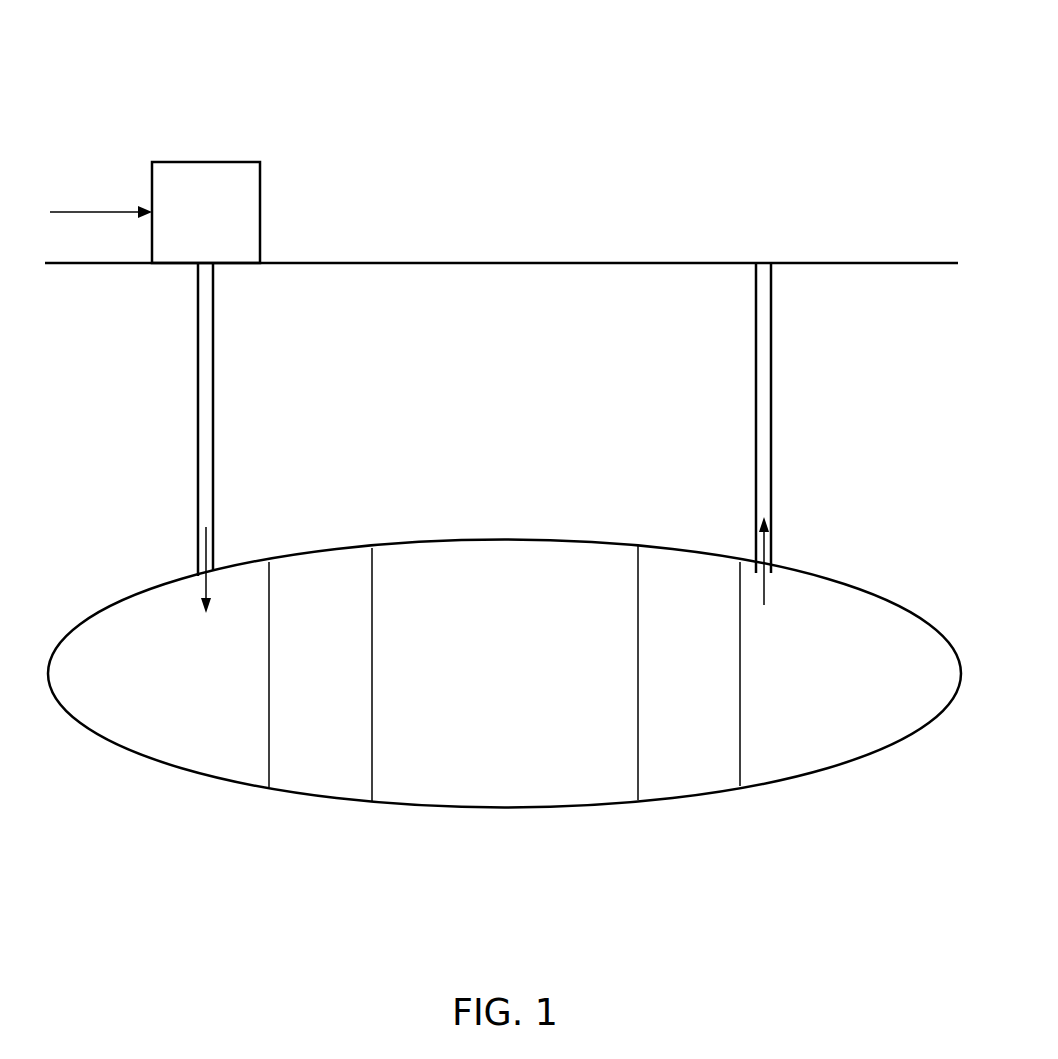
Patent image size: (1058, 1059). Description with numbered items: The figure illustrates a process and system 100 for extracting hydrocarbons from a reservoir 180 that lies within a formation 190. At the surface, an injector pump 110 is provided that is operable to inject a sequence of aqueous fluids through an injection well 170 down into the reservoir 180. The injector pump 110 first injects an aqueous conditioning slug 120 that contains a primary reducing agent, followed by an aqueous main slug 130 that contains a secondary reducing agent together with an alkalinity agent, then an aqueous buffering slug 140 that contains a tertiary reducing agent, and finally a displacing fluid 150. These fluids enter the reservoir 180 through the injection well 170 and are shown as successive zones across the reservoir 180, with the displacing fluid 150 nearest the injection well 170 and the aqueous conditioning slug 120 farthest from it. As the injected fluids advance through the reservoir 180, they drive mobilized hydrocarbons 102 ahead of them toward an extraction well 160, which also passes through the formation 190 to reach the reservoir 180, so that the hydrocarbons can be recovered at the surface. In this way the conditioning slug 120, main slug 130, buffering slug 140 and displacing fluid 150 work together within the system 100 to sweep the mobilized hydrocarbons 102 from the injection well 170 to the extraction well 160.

The process and system 100 is at (140, 50).
The injector pump 110 is at (231, 226).
The formation 190 is at (511, 371).
The injection well 170 is at (197, 397).
The extraction well 160 is at (773, 401).
The reservoir 180 is at (342, 548).
The displacing fluid 150 is at (208, 697).
The aqueous buffering slug 140 is at (345, 697).
The aqueous main slug 130 is at (523, 697).
The aqueous conditioning slug 120 is at (708, 697).
The mobilized hydrocarbons 102 is at (840, 697).